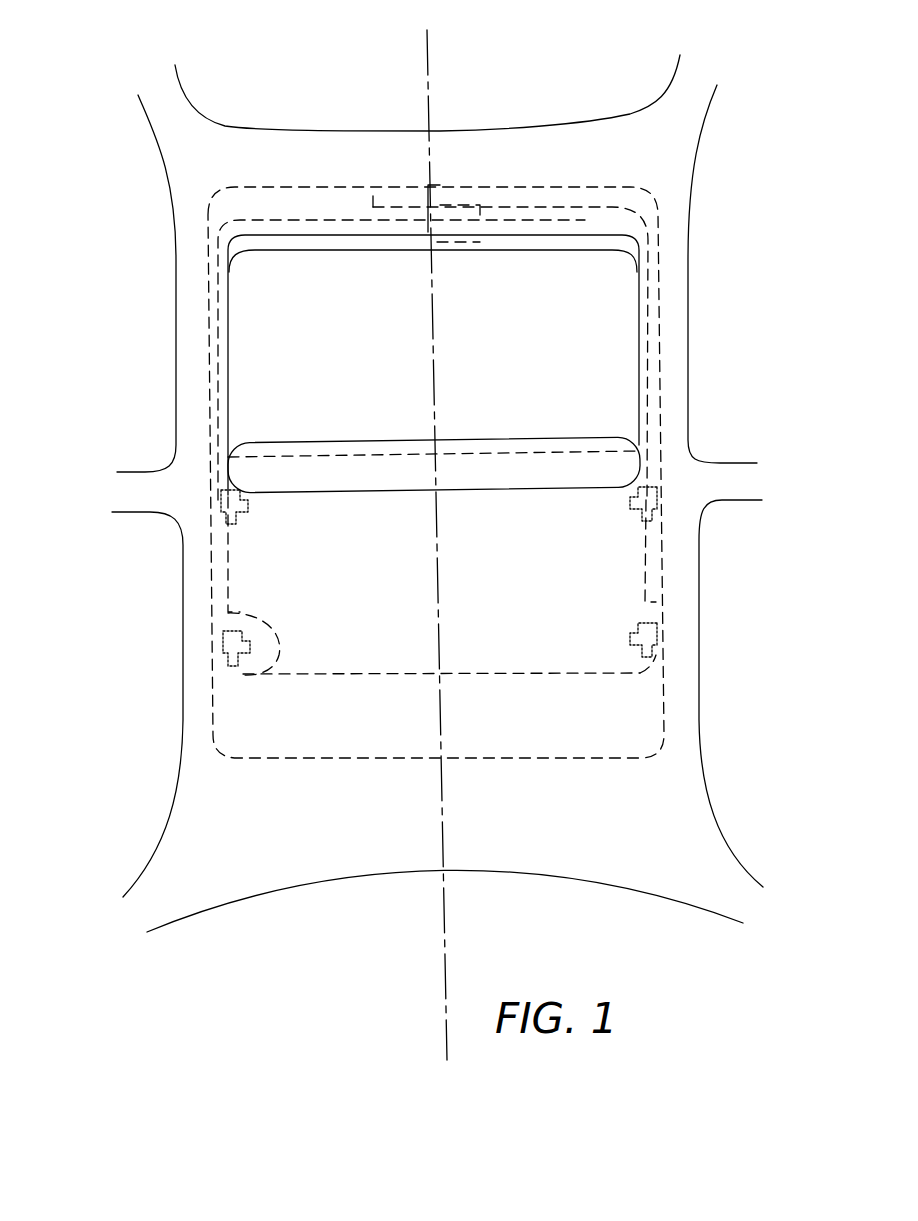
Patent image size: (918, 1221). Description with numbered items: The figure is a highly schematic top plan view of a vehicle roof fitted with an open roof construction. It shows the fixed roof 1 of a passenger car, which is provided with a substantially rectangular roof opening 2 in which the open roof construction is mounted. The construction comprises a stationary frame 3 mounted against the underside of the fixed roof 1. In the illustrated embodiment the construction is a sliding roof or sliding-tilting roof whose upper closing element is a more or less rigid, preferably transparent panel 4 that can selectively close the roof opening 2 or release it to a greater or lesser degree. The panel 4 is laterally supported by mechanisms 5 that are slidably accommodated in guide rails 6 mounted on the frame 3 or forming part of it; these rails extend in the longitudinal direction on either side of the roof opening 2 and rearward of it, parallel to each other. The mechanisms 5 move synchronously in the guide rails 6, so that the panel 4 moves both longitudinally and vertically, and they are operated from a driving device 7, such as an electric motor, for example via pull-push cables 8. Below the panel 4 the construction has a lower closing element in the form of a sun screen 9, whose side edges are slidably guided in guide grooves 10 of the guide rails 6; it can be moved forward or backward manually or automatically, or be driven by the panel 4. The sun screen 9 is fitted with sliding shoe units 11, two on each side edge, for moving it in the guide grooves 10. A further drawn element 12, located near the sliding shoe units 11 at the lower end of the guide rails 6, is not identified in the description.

The fixed roof 1 is at (217, 844).
The roof opening 2 is at (638, 322).
The stationary frame 3 is at (665, 708).
The panel 4 is at (598, 437).
The mechanisms 5 is at (210, 562).
The guide rails 6 is at (200, 307).
The driving device 7 is at (452, 240).
The pull-push cables 8 is at (325, 220).
The sun screen 9 is at (550, 448).
The guide grooves 10 is at (262, 678).
The sliding shoe units 11 is at (212, 497).
The hinge / pivot member 12 is at (213, 703).